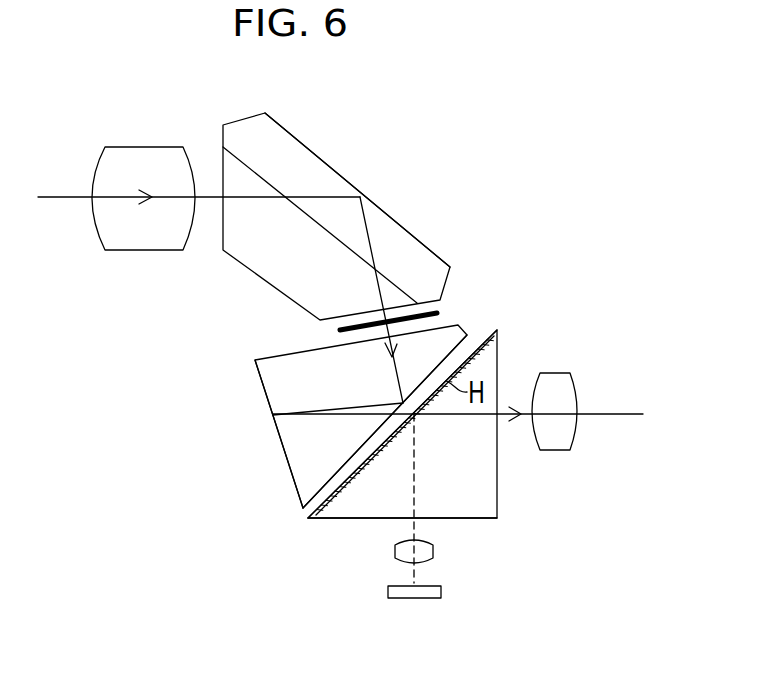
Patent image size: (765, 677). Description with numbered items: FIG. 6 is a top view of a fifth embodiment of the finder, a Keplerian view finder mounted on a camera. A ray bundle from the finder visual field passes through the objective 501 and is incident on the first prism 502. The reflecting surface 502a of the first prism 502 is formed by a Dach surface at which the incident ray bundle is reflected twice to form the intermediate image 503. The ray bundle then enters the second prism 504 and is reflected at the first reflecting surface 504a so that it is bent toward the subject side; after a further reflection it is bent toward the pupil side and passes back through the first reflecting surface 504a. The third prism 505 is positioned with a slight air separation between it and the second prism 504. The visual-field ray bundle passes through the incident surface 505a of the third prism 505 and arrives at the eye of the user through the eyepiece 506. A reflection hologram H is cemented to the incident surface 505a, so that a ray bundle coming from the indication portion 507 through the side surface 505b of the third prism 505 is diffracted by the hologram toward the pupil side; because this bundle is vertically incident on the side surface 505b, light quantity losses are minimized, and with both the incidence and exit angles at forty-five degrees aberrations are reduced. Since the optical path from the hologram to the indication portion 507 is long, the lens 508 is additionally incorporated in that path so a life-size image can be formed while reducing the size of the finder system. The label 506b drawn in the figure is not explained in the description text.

The objective 501 is at (132, 147).
The first prism 502 is at (297, 125).
The reflecting surface 502a is at (330, 178).
The intermediate image 503 is at (437, 312).
The second prism 504 is at (250, 343).
The first reflecting surface 504a is at (342, 456).
The third prism 505 is at (510, 483).
The incident surface 505a is at (465, 362).
The side surface 505b is at (343, 520).
The eyepiece 506 is at (558, 373).
The surface 506b is at (265, 400).
The indication portion 507 is at (420, 598).
The lens 508 is at (433, 550).